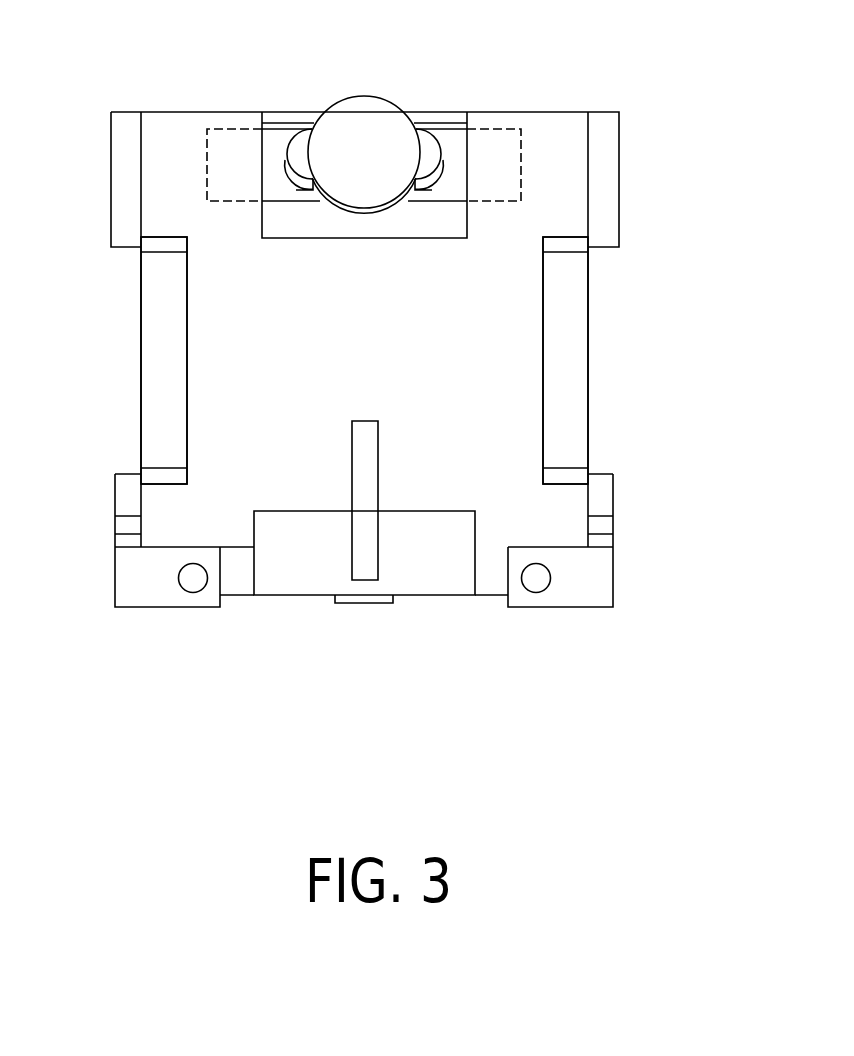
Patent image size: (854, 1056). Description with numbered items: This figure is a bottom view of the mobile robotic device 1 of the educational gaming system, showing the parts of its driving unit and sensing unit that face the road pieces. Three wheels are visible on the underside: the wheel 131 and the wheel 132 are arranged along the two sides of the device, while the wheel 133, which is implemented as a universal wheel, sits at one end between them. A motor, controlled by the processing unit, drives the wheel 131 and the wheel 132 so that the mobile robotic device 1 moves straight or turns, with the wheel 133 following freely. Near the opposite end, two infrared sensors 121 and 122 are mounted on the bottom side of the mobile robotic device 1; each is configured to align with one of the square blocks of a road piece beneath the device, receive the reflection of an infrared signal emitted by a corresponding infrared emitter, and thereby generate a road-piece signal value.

The mobile robotic device 1 is at (371, 346).
The infrared sensor 121 is at (533, 592).
The infrared sensor 122 is at (196, 592).
The wheel 131 is at (572, 367).
The wheel 132 is at (157, 372).
The wheel 133 is at (368, 125).